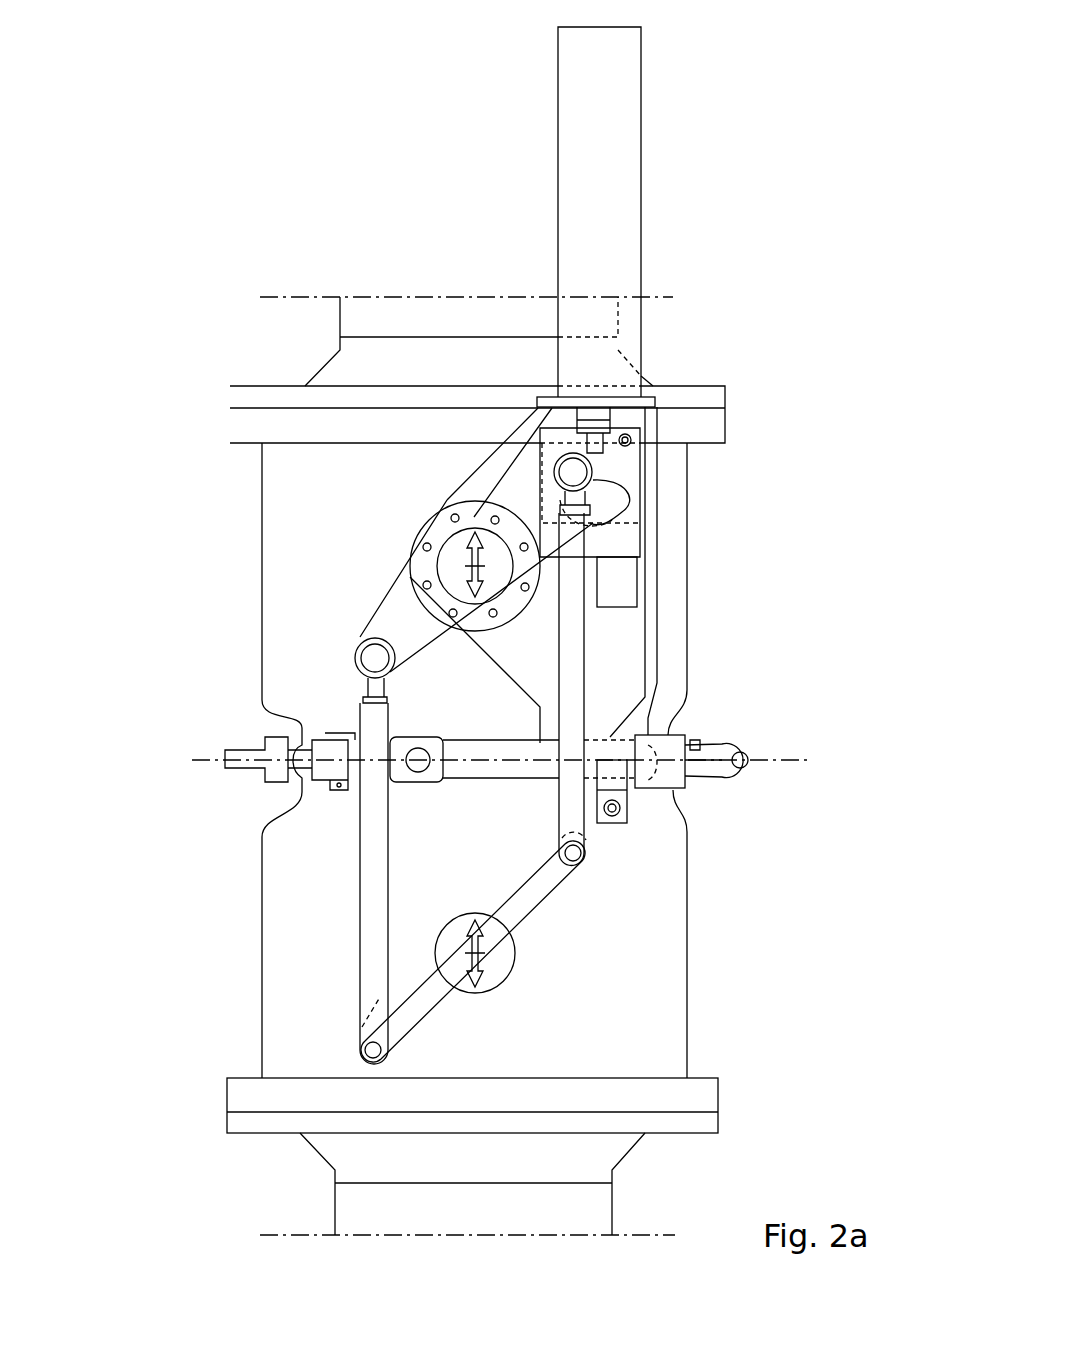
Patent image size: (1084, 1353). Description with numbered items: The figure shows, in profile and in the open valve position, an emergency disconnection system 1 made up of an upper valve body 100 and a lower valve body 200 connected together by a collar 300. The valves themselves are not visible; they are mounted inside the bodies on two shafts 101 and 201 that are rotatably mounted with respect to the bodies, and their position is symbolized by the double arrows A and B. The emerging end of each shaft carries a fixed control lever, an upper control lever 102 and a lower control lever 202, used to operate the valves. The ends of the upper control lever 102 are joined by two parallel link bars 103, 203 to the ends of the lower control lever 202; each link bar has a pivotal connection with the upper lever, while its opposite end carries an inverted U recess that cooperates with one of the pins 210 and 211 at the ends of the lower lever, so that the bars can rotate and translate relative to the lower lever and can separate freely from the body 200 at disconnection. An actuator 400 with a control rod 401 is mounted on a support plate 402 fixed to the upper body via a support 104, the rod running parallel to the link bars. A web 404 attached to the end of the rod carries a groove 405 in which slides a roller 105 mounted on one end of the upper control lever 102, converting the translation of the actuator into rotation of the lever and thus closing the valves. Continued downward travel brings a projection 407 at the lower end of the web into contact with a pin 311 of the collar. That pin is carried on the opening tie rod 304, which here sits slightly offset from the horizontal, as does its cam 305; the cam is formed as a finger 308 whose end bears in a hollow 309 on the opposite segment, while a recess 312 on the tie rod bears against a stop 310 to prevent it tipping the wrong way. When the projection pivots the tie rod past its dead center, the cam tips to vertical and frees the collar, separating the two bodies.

The emergency disconnection system 1 is at (763, 340).
The upper valve body 100 is at (288, 530).
The shaft 101 is at (427, 567).
The upper control lever 102 is at (392, 616).
The link bar 103 is at (375, 852).
The support 104 is at (450, 518).
The roller 105 is at (598, 502).
The lower valve body 200 is at (288, 890).
The shaft 201 is at (505, 965).
The lower control lever 202 is at (538, 917).
The link bar 203 is at (560, 648).
The pin 210 is at (576, 872).
The pin 211 is at (358, 1050).
The collar 300 is at (172, 760).
The opening tie rod 304 is at (480, 768).
The cam 305 is at (720, 768).
The finger 308 is at (690, 787).
The hollow 309 is at (668, 790).
The stop 310 is at (665, 737).
The pin 311 is at (615, 822).
The recess 312 is at (693, 742).
The actuator 400 is at (576, 140).
The control rod 401 is at (624, 404).
The support plate 402 is at (462, 487).
The web 404 is at (633, 485).
The groove 405 is at (603, 525).
The projection 407 is at (625, 593).
The double arrow A is at (487, 622).
The double arrow B is at (457, 915).